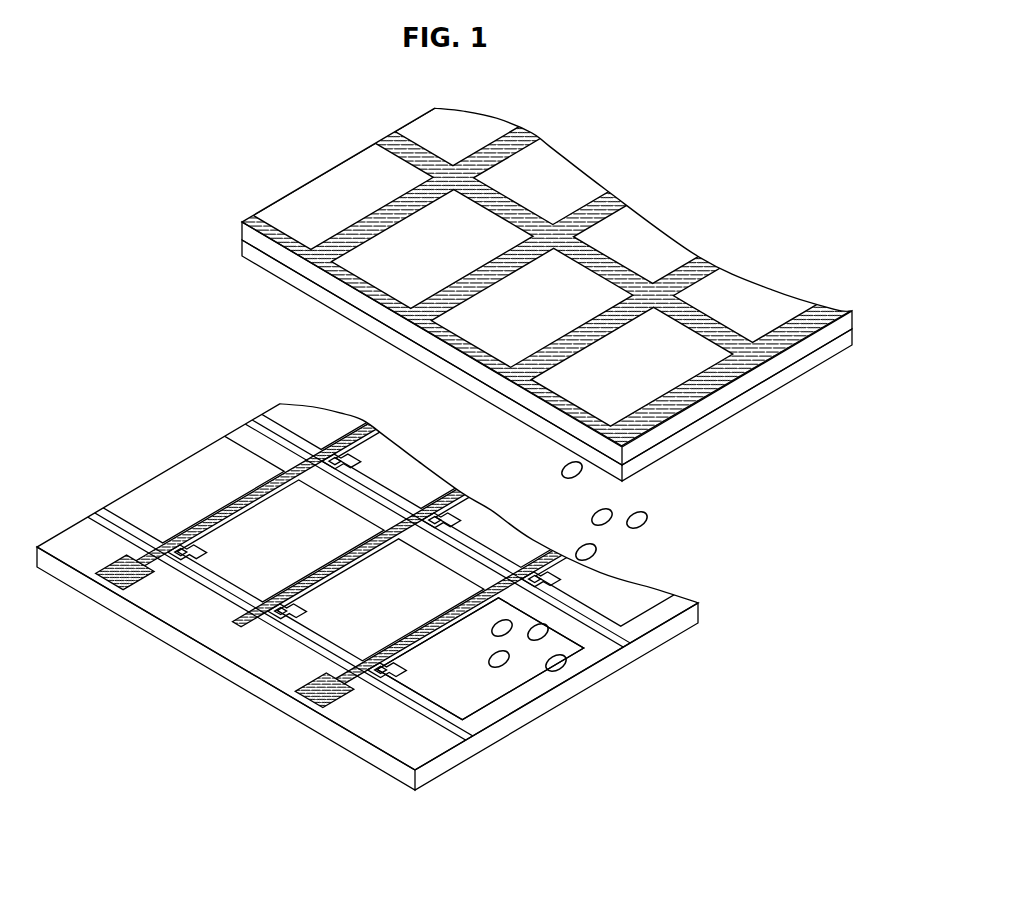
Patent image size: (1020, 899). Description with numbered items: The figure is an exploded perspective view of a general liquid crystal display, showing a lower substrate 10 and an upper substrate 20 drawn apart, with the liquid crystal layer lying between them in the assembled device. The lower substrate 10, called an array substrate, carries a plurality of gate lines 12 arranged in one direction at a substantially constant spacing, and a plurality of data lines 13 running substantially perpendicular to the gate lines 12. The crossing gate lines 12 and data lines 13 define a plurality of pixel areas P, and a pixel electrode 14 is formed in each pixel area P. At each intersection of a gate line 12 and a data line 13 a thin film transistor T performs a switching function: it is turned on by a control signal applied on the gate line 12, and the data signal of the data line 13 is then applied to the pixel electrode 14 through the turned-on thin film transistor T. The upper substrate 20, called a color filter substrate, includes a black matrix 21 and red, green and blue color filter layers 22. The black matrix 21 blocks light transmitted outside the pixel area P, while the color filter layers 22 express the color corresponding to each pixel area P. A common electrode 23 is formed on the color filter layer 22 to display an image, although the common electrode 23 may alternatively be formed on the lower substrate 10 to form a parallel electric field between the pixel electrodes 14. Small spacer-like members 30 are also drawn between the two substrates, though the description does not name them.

The lower substrate 10 is at (385, 768).
The gate line 12 is at (460, 733).
The data line 13 is at (308, 687).
The pixel electrode 14 is at (503, 697).
The thin film transistor T is at (375, 688).
The pixel area P is at (547, 680).
The upper substrate 20 is at (690, 418).
The black matrix 21 is at (768, 352).
The color filter layer 22 is at (487, 343).
The common electrode 23 is at (658, 452).
The spacer 30 is at (650, 523).